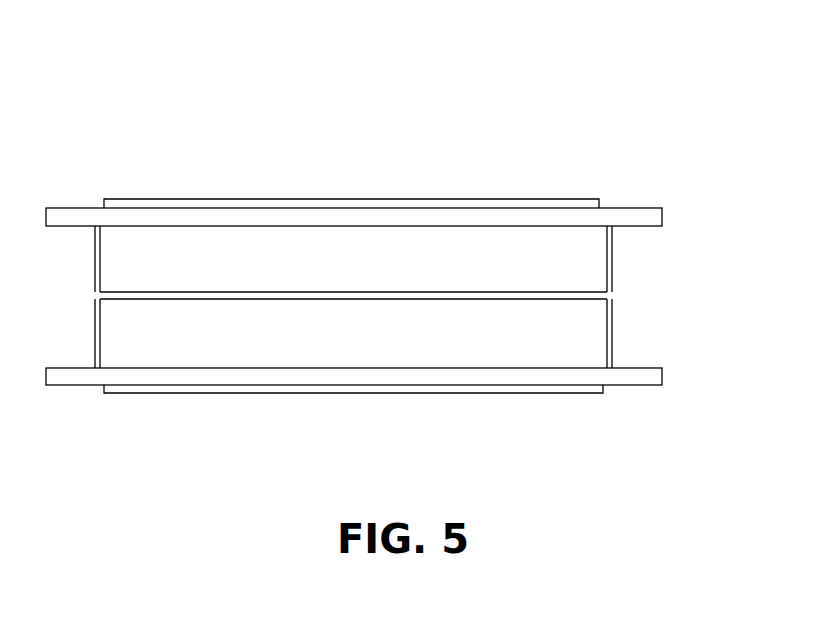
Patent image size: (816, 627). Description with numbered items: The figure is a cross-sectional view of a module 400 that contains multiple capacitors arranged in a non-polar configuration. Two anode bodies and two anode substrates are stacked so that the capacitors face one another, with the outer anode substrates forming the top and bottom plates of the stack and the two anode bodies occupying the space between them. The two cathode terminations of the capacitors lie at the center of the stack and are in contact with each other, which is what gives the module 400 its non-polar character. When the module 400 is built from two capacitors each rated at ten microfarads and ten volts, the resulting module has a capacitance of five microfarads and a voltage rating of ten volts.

The module 400 is at (271, 95).